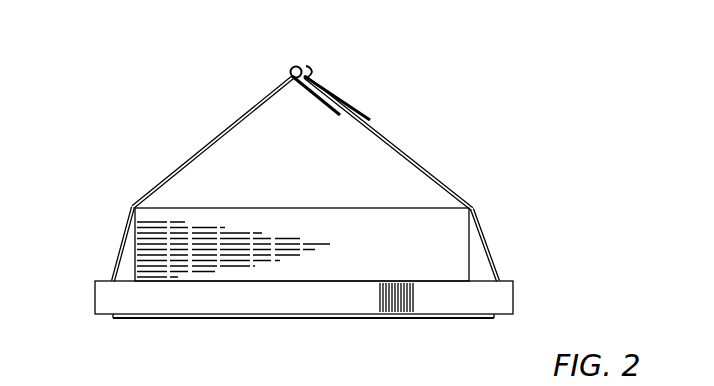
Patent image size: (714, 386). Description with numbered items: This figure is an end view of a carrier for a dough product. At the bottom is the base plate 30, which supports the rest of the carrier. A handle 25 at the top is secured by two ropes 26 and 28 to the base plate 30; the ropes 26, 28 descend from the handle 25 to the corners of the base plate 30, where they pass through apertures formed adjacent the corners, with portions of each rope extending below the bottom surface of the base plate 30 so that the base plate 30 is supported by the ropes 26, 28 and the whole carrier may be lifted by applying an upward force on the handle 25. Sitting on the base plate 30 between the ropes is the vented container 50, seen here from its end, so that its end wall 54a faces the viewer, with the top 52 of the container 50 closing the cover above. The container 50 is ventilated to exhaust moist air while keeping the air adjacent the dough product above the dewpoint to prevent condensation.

The handle 25 is at (302, 64).
The rope 26 is at (372, 123).
The rope 28 is at (215, 134).
The base plate 30 is at (496, 292).
The vented container 50 is at (448, 237).
The end wall 54a is at (400, 247).
The top 52 is at (207, 381).